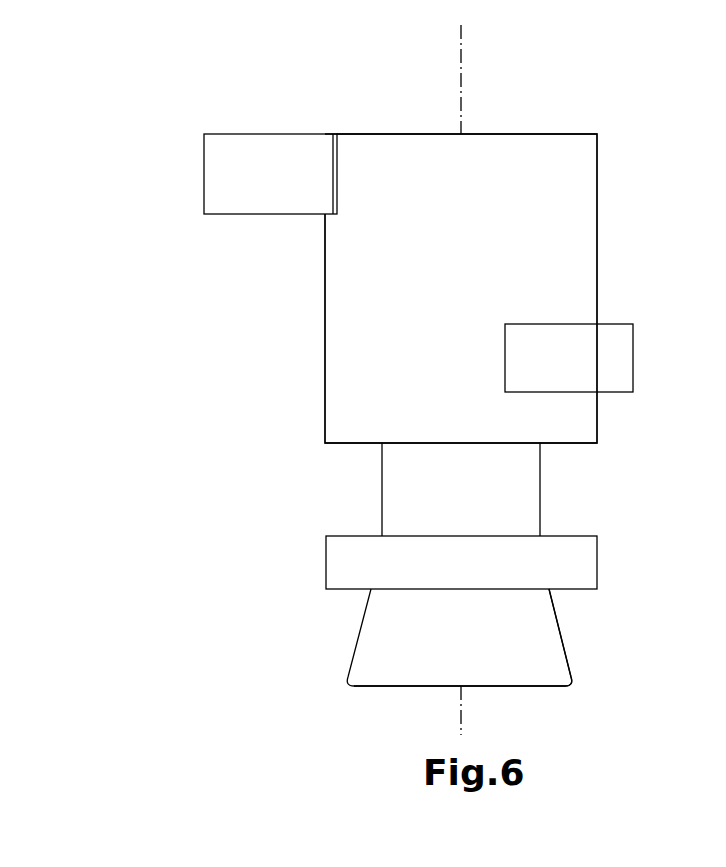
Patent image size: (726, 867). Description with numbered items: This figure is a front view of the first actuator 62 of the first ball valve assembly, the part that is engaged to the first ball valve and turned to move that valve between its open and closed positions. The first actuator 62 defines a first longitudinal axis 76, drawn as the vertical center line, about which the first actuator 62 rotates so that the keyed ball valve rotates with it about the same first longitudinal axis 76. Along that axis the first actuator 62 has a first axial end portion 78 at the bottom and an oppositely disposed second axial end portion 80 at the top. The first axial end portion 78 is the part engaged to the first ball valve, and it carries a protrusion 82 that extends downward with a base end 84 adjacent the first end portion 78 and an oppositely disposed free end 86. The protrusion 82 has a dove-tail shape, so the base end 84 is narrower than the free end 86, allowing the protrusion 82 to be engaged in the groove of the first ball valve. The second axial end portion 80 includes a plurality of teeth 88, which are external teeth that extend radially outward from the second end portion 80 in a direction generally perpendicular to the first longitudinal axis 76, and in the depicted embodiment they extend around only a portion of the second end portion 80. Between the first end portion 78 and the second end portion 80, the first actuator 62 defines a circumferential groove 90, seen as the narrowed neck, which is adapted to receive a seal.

The first actuator 62 is at (585, 106).
The first longitudinal axis 76 is at (461, 90).
The first axial end portion 78 is at (597, 556).
The second axial end portion 80 is at (597, 172).
The protrusion 82 is at (356, 636).
The base end 84 is at (552, 597).
The free end 86 is at (573, 683).
The teeth 88 is at (204, 183).
The circumferential groove 90 is at (540, 492).